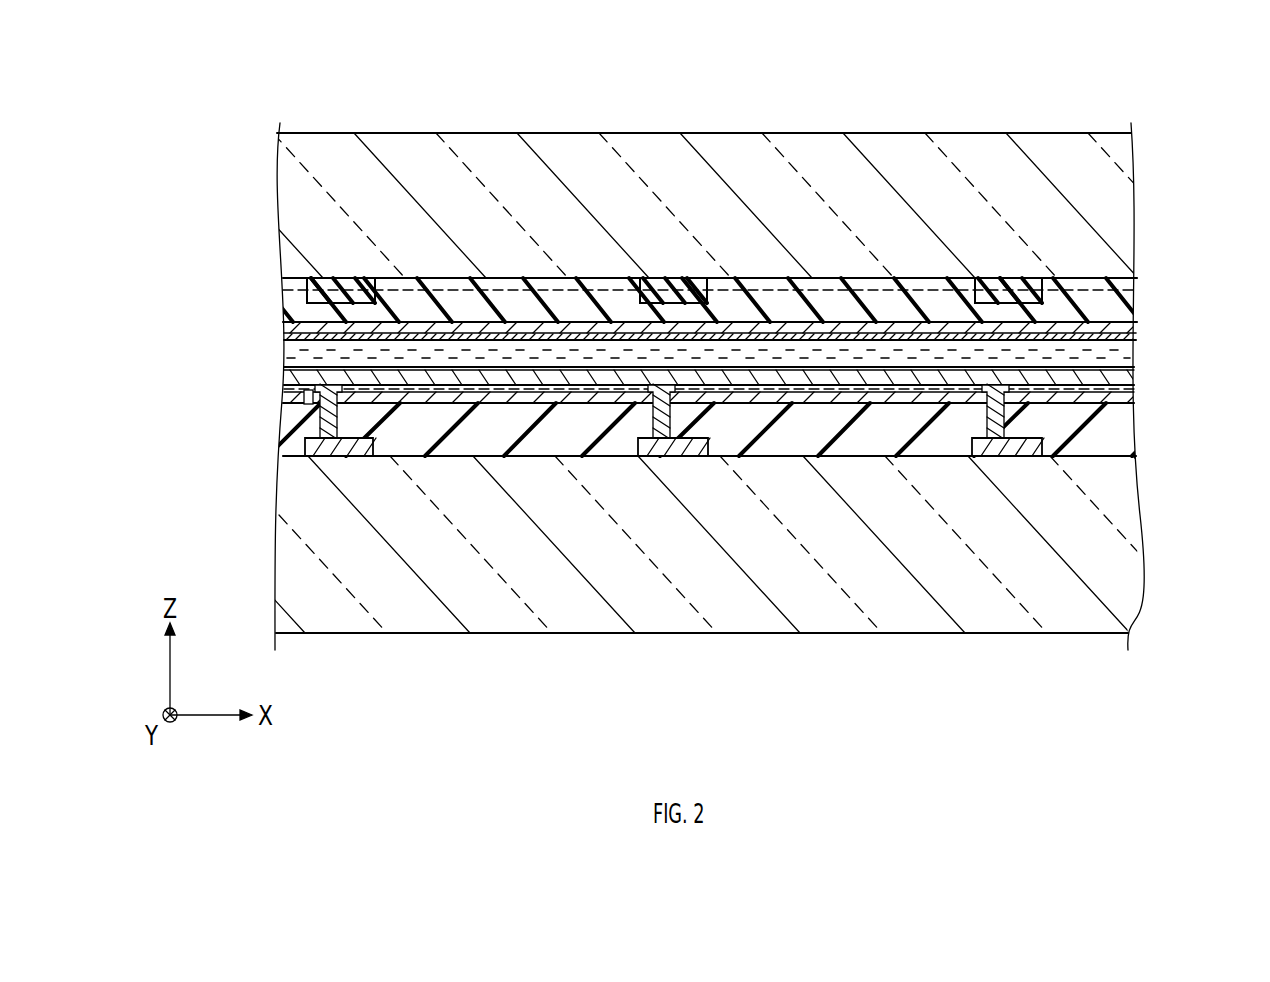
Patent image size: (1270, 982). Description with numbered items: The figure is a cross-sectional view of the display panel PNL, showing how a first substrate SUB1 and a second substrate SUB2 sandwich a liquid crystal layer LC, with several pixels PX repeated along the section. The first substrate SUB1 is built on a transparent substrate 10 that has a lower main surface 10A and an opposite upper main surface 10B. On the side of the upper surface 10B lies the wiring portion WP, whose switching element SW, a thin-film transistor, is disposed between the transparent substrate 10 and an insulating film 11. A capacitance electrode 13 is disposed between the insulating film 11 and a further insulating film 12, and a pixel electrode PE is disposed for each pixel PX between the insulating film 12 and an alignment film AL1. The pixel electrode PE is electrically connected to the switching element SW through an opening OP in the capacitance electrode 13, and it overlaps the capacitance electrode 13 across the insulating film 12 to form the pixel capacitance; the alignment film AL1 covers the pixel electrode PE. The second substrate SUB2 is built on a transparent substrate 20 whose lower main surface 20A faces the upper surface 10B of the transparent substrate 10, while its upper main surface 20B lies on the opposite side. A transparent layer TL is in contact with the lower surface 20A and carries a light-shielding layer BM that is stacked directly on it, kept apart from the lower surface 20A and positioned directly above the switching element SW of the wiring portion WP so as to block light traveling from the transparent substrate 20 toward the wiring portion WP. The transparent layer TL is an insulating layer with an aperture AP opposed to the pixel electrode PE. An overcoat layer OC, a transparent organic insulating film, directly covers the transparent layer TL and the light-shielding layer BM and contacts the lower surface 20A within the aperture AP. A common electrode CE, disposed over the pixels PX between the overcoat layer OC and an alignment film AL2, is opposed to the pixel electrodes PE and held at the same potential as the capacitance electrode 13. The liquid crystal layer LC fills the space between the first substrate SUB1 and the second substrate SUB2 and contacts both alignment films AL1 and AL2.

The display panel PNL is at (1117, 131).
The first substrate SUB1 is at (1148, 518).
The second substrate SUB2 is at (1148, 243).
The transparent substrate 10 is at (290, 572).
The main surface (lower surface) 10A is at (917, 635).
The main surface (upper surface) 10B is at (836, 447).
The insulating film 11 is at (304, 443).
The insulating film 12 is at (281, 373).
The capacitance electrode 13 is at (283, 397).
The opening OP is at (308, 407).
The switching element SW is at (626, 552).
The wiring portion WP is at (1017, 440).
The pixel electrode PE is at (492, 378).
The alignment film AL1 is at (284, 351).
The alignment film AL2 is at (1126, 343).
The liquid crystal layer LC is at (1131, 360).
The common electrode CE is at (1131, 330).
The overcoat layer OC is at (1140, 306).
The light-shielding layer BM is at (343, 297).
The transparent layer TL is at (361, 292).
The aperture AP is at (586, 290).
The transparent substrate 20 is at (290, 205).
The main surface (lower surface) 20A is at (838, 296).
The main surface (upper surface) 20B is at (927, 129).
The pixel PX is at (510, 428).